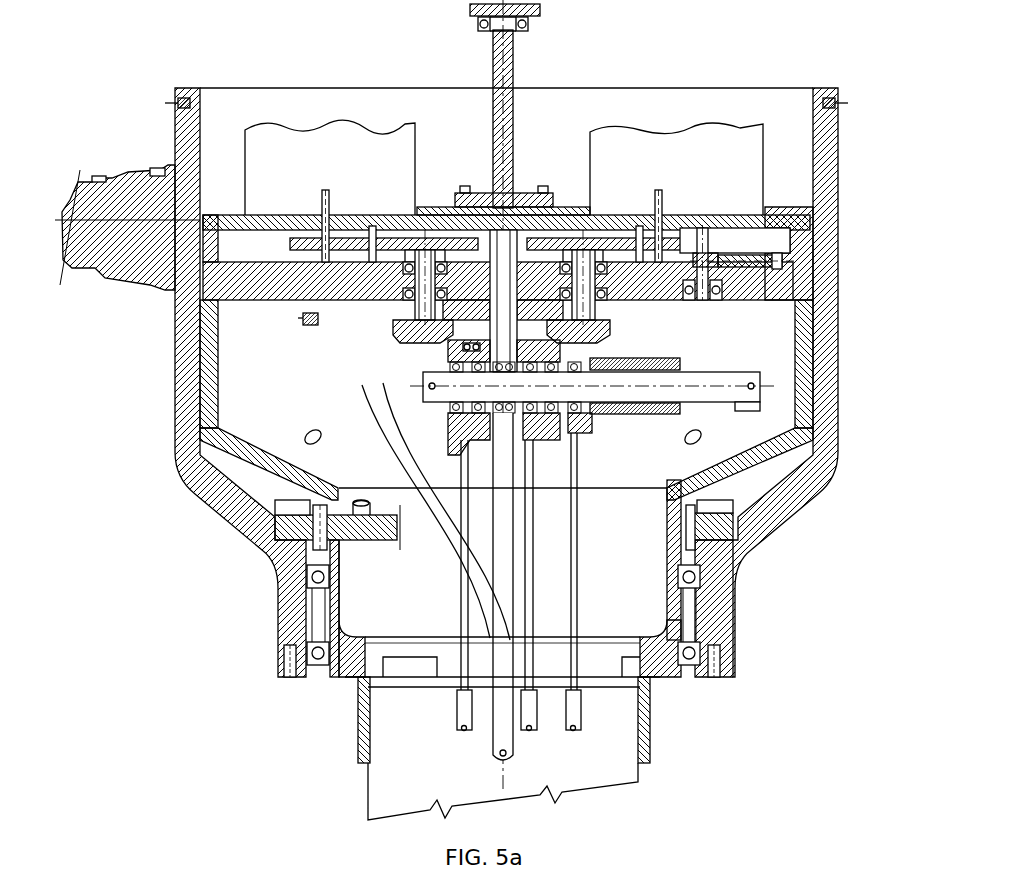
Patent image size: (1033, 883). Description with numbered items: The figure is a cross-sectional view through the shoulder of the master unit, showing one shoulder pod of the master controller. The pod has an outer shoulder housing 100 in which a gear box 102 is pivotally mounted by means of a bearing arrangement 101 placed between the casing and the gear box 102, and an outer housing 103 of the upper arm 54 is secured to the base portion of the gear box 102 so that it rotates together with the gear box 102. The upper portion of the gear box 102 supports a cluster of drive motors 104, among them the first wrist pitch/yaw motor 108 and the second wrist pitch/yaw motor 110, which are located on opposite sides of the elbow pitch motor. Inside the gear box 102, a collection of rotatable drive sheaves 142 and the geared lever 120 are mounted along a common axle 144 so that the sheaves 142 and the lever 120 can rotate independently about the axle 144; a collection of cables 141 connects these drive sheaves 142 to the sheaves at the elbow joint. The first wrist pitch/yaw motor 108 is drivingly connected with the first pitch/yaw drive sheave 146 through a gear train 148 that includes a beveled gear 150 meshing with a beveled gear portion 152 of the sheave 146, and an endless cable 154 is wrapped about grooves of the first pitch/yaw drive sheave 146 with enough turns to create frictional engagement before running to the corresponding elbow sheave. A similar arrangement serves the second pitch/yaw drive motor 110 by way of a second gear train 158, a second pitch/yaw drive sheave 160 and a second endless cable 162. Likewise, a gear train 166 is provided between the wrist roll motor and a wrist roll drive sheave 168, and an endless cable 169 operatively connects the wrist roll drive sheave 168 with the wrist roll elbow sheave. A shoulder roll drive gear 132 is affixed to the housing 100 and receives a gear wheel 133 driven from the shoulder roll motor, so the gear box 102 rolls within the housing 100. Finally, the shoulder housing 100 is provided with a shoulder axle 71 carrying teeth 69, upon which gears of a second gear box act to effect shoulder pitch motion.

The upper arm 54 is at (368, 785).
The teeth 69 is at (97, 178).
The shoulder axle 71 is at (128, 190).
The outer shoulder housing 100 is at (173, 450).
The bearing arrangement 101 is at (278, 608).
The gear box 102 is at (807, 332).
The outer housing of the upper arm 103 is at (357, 728).
The cluster of drive motors 104 is at (570, 127).
The first wrist pitch/yaw motor 108 is at (632, 133).
The second wrist pitch/yaw motor 110 is at (353, 127).
The geared lever 120 is at (505, 443).
The shoulder roll drive gear 132 is at (277, 530).
The gear wheel 133 is at (365, 540).
The cables 141 is at (598, 567).
The drive sheaves 142 is at (756, 423).
The common axle 144 is at (758, 385).
The first pitch/yaw drive sheave 146 is at (535, 432).
The gear train 148 is at (652, 236).
The beveled gear 150 is at (560, 337).
The beveled gear portion 152 is at (515, 330).
The endless cable 154 is at (533, 732).
The second gear train 158 is at (305, 237).
The second pitch/yaw drive sheave 160 is at (450, 357).
The second endless cable 162 is at (463, 732).
The gear train 166 is at (748, 253).
The wrist roll drive sheave 168 is at (587, 428).
The endless cable 169 is at (577, 727).